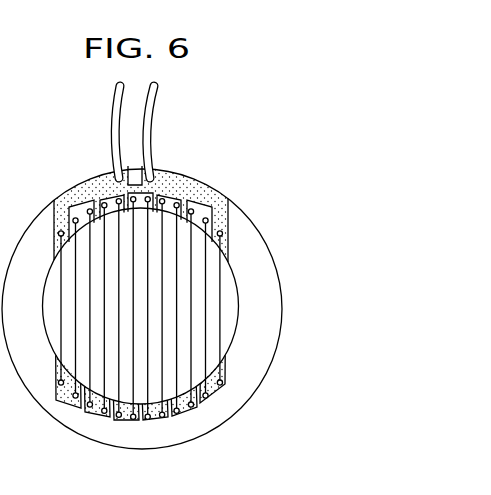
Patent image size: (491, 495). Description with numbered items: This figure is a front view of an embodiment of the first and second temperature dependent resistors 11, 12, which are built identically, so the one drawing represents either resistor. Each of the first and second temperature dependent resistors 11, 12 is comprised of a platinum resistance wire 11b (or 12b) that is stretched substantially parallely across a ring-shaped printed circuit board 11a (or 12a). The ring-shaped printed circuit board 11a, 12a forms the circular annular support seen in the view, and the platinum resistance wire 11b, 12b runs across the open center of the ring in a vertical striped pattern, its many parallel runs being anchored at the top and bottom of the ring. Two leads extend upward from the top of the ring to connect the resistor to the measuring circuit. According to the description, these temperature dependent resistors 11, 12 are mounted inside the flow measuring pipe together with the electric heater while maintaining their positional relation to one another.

The first temperature dependent resistor 11 is at (169, 267).
The second temperature dependent resistor 12 is at (251, 216).
The ring-shaped printed circuit board 11a is at (184, 307).
The ring-shaped printed circuit board 12a is at (257, 262).
The platinum resistance wire 11b is at (208, 308).
The platinum resistance wire 12b is at (220, 320).